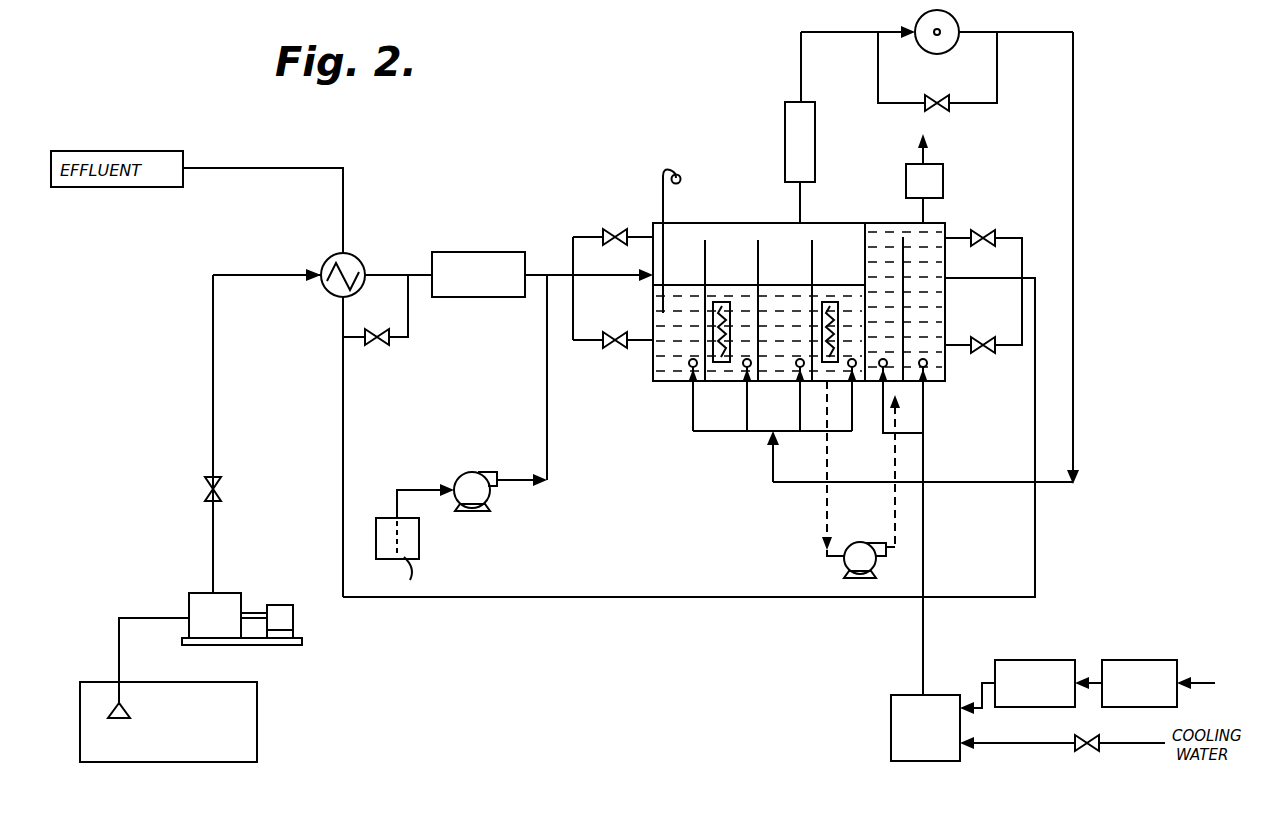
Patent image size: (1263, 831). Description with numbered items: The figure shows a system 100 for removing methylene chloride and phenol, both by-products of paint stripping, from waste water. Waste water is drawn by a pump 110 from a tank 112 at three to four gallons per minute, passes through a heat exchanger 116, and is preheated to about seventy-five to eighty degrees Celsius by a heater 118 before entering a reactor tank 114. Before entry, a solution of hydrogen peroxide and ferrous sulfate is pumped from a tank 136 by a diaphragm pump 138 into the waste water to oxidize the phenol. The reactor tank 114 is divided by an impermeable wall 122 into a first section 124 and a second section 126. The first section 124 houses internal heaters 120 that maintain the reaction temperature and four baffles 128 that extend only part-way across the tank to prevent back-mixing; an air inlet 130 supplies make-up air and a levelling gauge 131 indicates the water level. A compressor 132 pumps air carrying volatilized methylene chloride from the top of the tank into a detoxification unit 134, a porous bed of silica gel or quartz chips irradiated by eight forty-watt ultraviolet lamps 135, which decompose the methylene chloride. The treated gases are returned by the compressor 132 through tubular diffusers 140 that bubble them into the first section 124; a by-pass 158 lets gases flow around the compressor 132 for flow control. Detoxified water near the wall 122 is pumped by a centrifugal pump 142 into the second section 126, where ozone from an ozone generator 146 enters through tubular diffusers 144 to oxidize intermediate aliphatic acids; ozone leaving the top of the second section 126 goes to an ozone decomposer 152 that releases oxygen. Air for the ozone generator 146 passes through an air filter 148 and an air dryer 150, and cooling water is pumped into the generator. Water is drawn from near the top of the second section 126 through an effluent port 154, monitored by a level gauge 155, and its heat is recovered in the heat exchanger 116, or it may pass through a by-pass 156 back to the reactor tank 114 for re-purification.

The system 100 is at (1110, 89).
The pump 110 is at (280, 605).
The tank 112 is at (258, 697).
The reactor tank 114 is at (661, 385).
The heat exchanger 116 is at (357, 259).
The heater 118 is at (492, 251).
The internal heaters 120 is at (722, 302).
The impermeable wall 122 is at (868, 214).
The first section 124 is at (828, 210).
The second section 126 is at (967, 211).
The baffles 128 is at (812, 262).
The air inlet 130 is at (681, 178).
The levelling gauge 131 is at (575, 225).
The compressor 132 is at (958, 22).
The detoxification unit 134 is at (816, 130).
The ultraviolet lamps 135 is at (785, 144).
The tank 136 is at (420, 536).
The diaphragm pump 138 is at (476, 472).
The tubular diffusers 140 is at (691, 358).
The centrifugal pump 142 is at (860, 542).
The tubular diffusers 144 is at (885, 357).
The ozone generator 146 is at (893, 703).
The air filter 148 is at (1163, 660).
The air dryer 150 is at (1058, 660).
The ozone decomposer 152 is at (958, 160).
The effluent port 154 is at (947, 280).
The level gauge 155 is at (1023, 228).
The by-pass 156 is at (375, 349).
The by-pass 158 is at (940, 95).